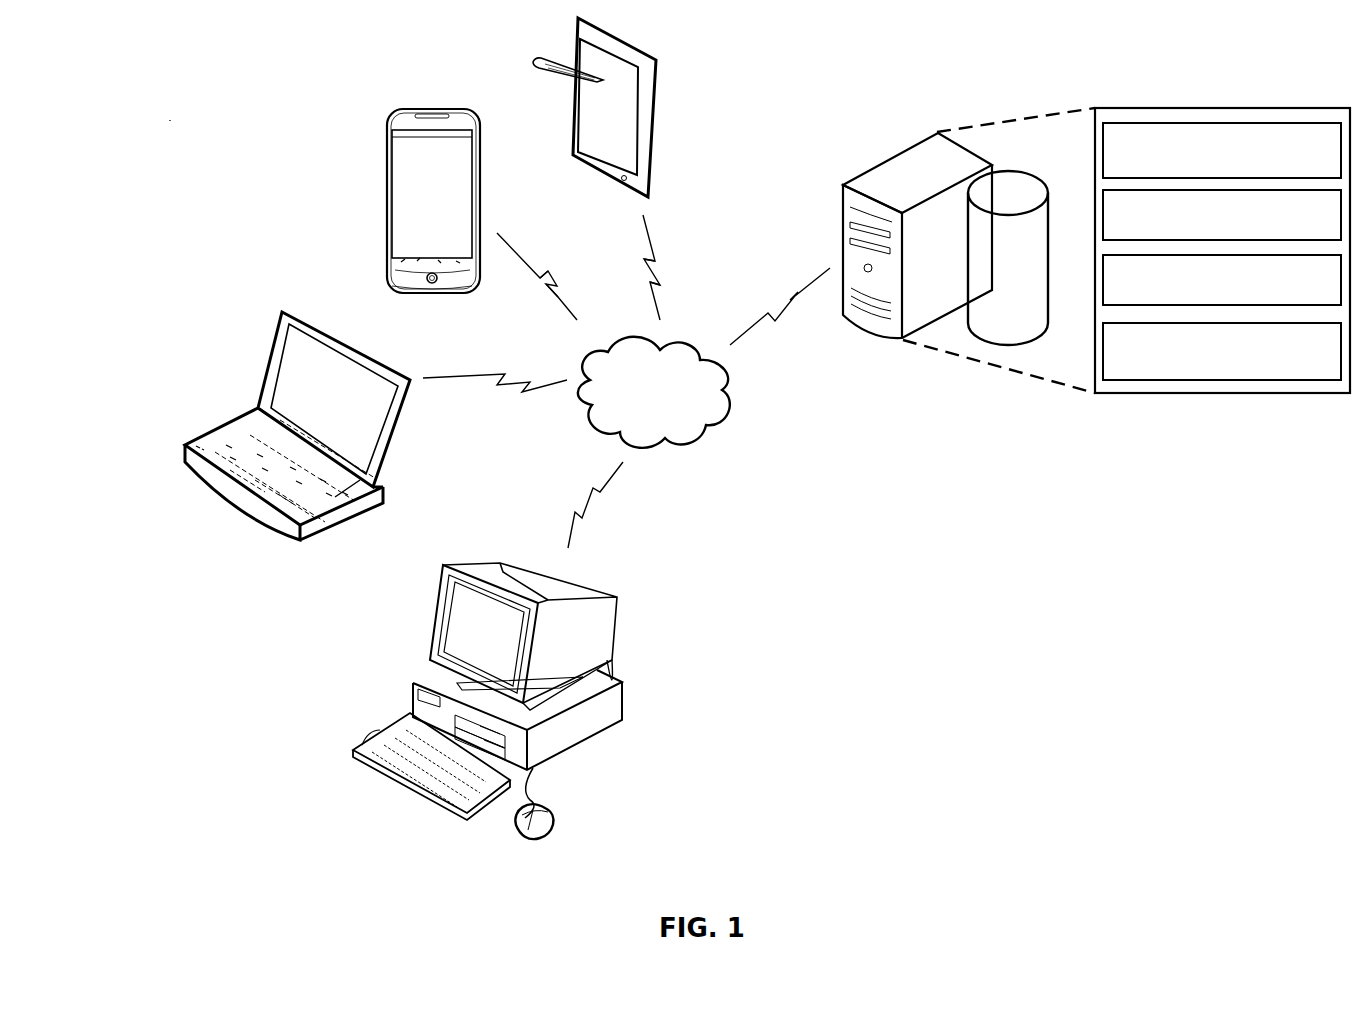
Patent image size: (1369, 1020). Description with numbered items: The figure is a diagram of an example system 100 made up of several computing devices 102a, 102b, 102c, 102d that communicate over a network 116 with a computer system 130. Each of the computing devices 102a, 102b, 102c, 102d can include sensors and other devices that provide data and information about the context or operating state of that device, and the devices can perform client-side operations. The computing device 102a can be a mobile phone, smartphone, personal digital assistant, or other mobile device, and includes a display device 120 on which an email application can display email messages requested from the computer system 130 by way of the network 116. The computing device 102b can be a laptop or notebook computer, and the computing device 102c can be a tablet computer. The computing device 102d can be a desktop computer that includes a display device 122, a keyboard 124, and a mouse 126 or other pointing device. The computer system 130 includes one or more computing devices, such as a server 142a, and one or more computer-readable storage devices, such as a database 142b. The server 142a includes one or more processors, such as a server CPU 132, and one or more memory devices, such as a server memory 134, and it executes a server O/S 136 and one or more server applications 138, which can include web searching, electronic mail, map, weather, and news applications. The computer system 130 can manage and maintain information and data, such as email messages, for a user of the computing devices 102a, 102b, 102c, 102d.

The system 100 is at (168, 98).
The computing device 102a is at (277, 426).
The computing device 102b is at (655, 56).
The computing device 102c is at (410, 203).
The computing device 102d is at (490, 701).
The network 116 is at (635, 426).
The display device 120 is at (314, 406).
The display device 122 is at (467, 644).
The keyboard 124 is at (350, 750).
The mouse 126 is at (550, 813).
The computer system 130 is at (836, 130).
The server CPU 132 is at (1298, 170).
The server memory 134 is at (1298, 232).
The server O/S 136 is at (1298, 297).
The server applications 138 is at (1298, 370).
The server 142a is at (891, 186).
The database 142b is at (986, 276).